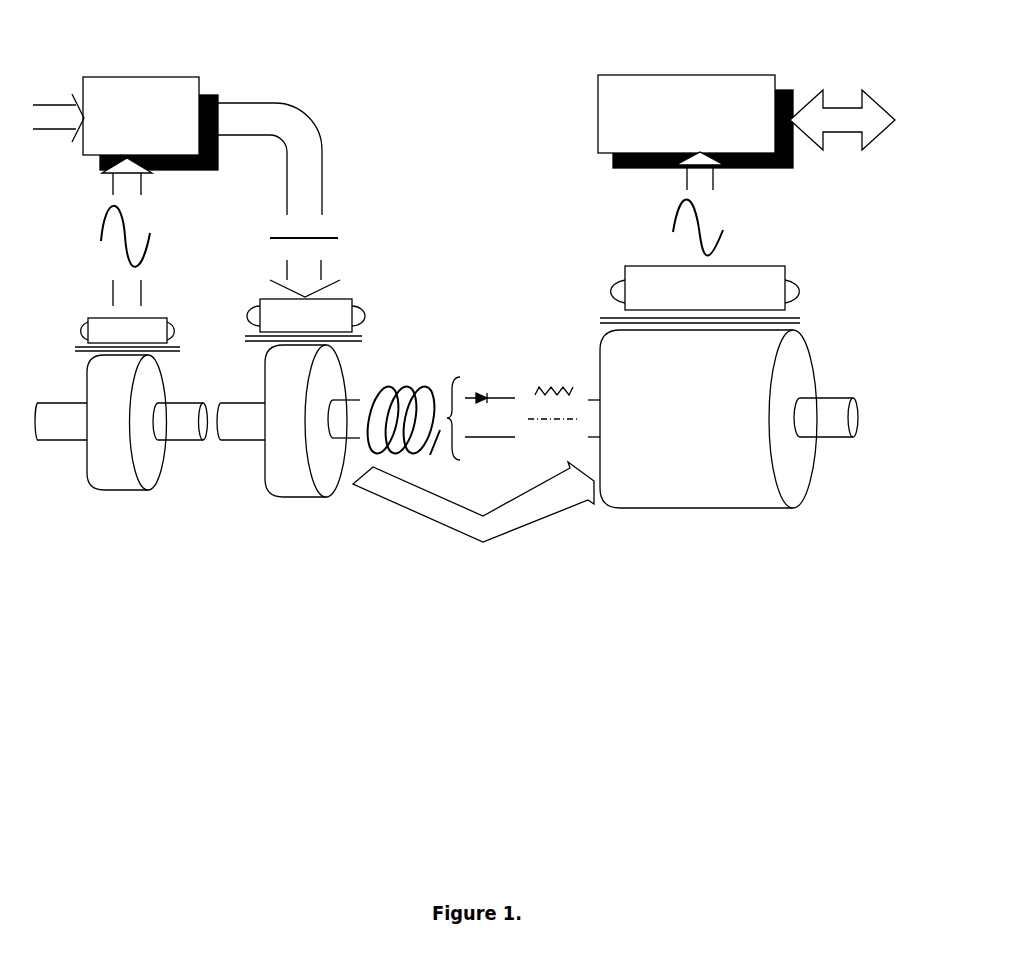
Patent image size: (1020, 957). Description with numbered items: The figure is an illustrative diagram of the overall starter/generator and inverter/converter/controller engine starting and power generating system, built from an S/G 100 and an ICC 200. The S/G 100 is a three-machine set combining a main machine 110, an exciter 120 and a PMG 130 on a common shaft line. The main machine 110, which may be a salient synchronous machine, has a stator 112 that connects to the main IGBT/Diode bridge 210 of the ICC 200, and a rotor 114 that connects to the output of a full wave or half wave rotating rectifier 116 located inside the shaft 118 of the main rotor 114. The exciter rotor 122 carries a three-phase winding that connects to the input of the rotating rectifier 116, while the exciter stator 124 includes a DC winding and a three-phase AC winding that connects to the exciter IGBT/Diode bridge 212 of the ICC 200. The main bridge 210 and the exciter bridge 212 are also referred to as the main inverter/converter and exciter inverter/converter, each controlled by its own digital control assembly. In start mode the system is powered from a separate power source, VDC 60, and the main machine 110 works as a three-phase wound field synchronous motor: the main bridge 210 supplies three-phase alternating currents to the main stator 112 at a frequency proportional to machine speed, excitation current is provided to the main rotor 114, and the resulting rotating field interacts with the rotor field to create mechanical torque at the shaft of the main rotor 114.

The ICC 200 is at (508, 70).
The exciter IGBT/Diode bridge 212 is at (190, 77).
The main IGBT/Diode bridge 210 is at (768, 75).
The VDC 60 is at (873, 140).
The S/G 100 is at (581, 266).
The PMG 130 is at (119, 544).
The exciter stator 124 is at (352, 306).
The exciter rotor 122 is at (265, 483).
The exciter 120 is at (300, 560).
The rotating rectifier 116 is at (481, 360).
The shaft 118 is at (588, 400).
The stator 112 is at (787, 270).
The rotor 114 is at (807, 352).
The main machine 110 is at (788, 524).